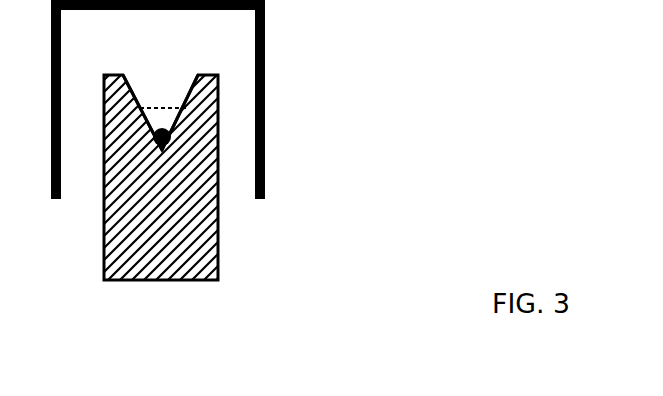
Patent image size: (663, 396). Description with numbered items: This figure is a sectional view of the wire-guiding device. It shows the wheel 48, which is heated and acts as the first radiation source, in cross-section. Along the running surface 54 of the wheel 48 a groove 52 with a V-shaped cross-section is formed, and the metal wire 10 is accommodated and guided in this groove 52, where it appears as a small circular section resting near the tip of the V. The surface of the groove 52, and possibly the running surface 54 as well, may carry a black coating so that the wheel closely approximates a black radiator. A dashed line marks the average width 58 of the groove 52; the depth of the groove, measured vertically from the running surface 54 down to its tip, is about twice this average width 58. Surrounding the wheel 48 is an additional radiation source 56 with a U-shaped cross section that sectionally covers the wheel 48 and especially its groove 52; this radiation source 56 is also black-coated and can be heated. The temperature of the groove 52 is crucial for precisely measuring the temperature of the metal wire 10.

The metal wire 10 is at (166, 128).
The wheel 48 is at (133, 257).
The groove 52 is at (187, 97).
The running surface 54 is at (120, 75).
The radiation source 56 is at (265, 83).
The average width 58 is at (150, 108).